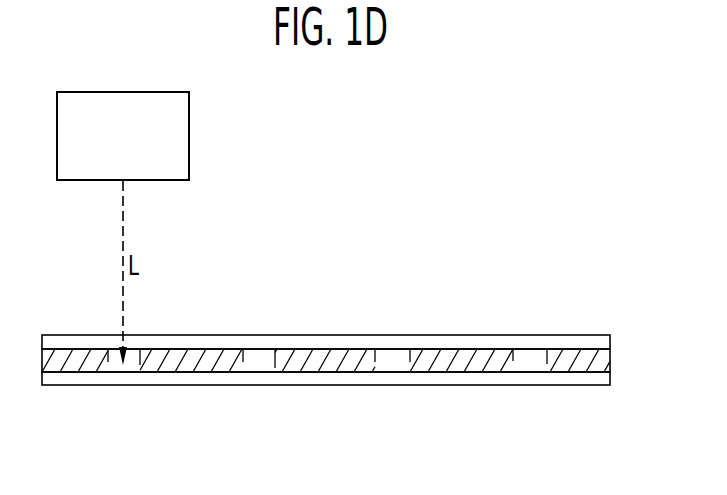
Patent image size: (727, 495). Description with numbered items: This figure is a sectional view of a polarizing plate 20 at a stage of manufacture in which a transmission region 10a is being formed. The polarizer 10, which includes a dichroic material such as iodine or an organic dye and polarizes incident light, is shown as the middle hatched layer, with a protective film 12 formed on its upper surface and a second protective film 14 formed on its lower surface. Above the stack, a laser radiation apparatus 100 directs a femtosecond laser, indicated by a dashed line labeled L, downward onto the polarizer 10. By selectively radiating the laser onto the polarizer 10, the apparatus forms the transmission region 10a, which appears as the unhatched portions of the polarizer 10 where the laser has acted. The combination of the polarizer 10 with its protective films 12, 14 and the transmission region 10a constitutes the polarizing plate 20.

The laser radiation apparatus 100 is at (183, 150).
The polarizing plate 20 is at (357, 345).
The protective film 12 is at (605, 342).
The polarizer 10 is at (605, 362).
The transmission region 10a is at (256, 368).
The protective film 14 is at (605, 378).